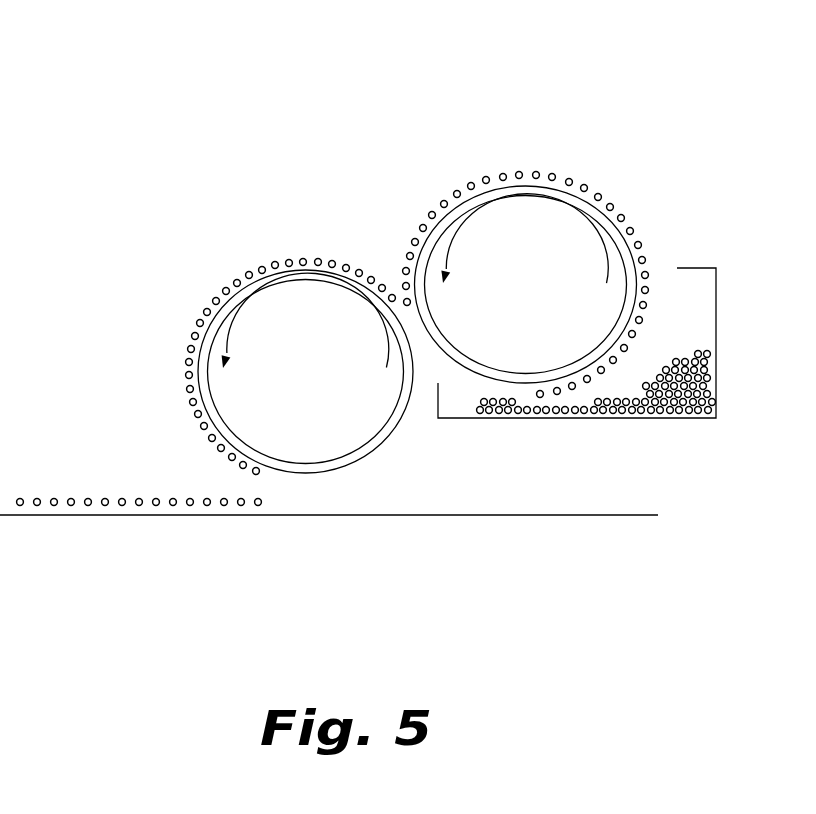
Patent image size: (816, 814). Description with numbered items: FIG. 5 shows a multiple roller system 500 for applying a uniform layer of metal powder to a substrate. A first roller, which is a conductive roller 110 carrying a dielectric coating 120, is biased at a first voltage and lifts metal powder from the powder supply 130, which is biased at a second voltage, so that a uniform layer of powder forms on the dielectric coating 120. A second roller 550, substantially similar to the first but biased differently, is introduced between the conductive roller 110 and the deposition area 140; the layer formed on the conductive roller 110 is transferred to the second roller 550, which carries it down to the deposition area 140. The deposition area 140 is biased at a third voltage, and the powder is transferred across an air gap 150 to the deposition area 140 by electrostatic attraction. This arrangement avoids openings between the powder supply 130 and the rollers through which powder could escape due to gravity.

The particle deposition system 500 is at (377, 97).
The conductive roller 110 is at (547, 297).
The second roller 550 is at (330, 386).
The dielectric coating 120 is at (411, 236).
The powder supply 130 is at (700, 337).
The air gap 150 is at (325, 506).
The deposition area 140 is at (325, 571).